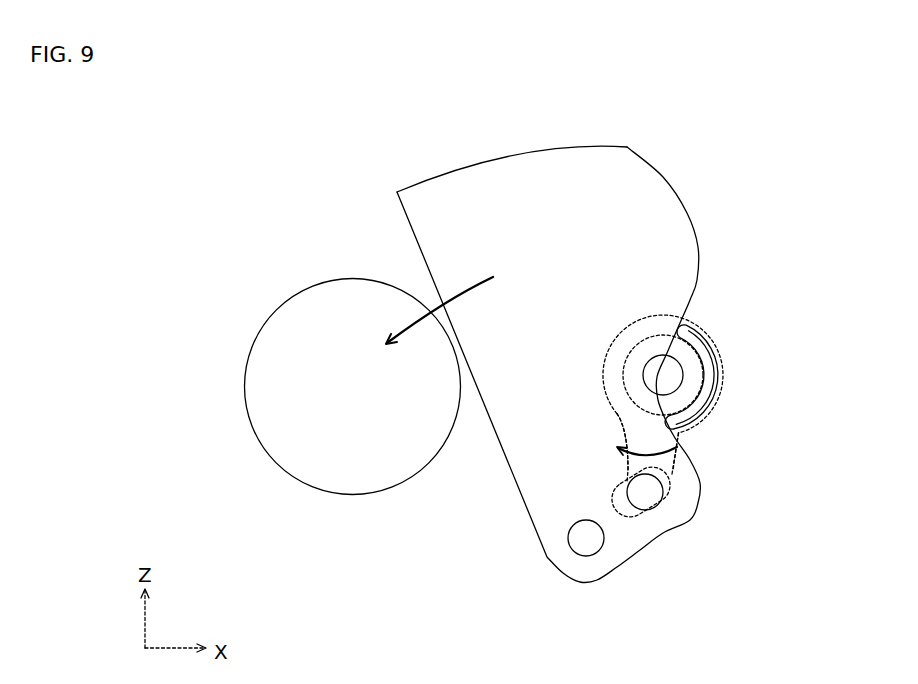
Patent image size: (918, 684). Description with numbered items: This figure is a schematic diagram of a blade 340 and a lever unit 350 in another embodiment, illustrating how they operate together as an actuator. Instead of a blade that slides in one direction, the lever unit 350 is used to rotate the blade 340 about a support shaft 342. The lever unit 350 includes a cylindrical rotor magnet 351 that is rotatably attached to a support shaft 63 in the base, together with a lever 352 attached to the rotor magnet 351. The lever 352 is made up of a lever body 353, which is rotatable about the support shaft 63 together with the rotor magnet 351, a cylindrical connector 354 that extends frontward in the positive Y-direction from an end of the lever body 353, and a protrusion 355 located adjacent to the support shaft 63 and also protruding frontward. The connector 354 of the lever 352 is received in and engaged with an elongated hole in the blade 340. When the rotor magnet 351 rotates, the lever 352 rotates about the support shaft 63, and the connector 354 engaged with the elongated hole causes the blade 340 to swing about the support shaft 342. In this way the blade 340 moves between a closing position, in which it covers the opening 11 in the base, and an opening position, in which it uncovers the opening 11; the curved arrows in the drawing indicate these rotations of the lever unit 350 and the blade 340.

The blade 340 is at (438, 170).
The opening 11 is at (368, 415).
The support shaft 342 is at (585, 540).
The lever unit 350 is at (698, 447).
The support shaft 63 is at (672, 373).
The rotor magnet 351 is at (690, 388).
The protrusion 355 is at (693, 412).
The lever 352 is at (683, 439).
The lever body 353 is at (698, 497).
The connector 354 is at (645, 492).